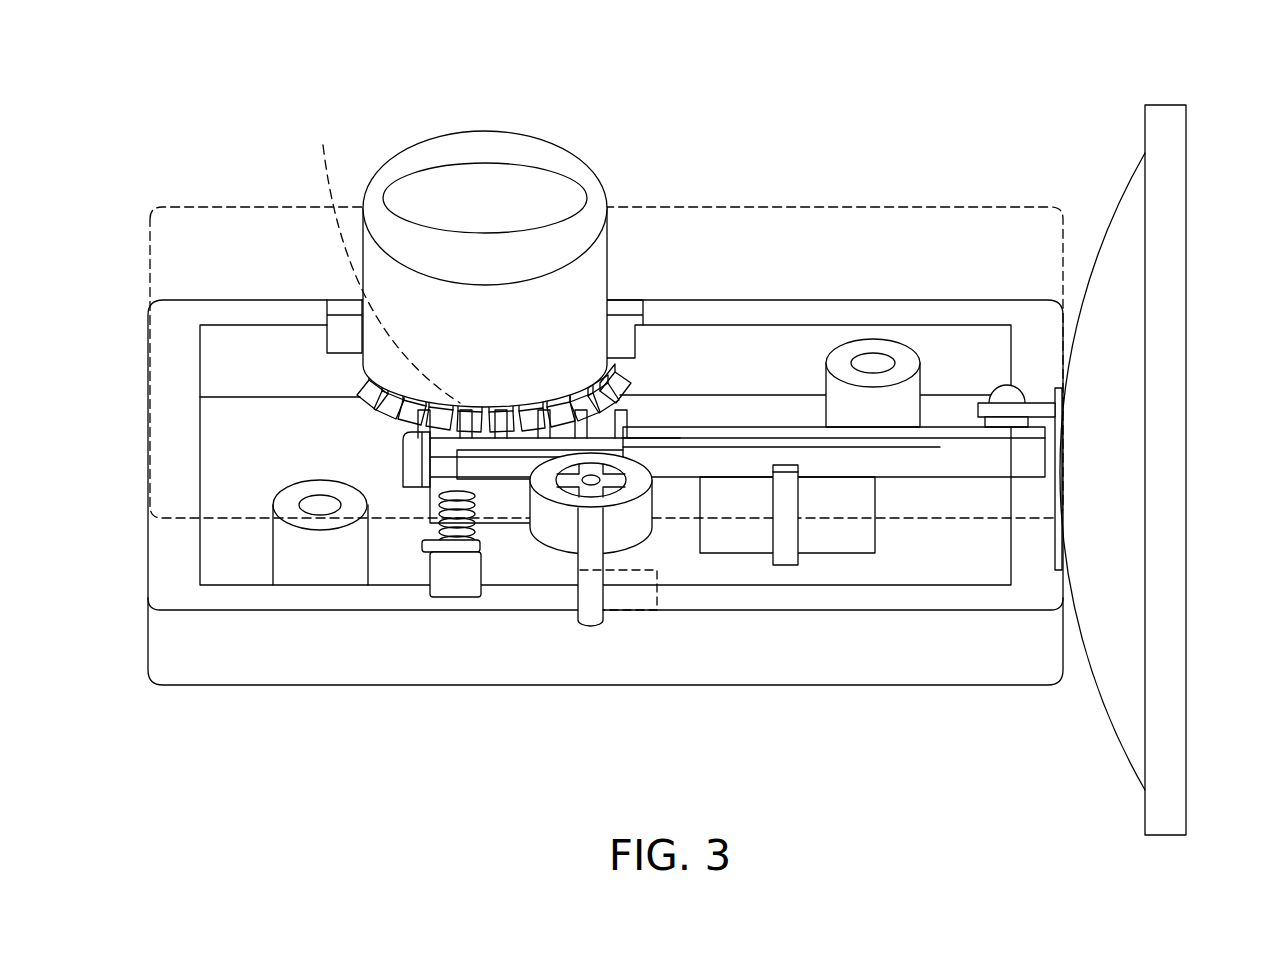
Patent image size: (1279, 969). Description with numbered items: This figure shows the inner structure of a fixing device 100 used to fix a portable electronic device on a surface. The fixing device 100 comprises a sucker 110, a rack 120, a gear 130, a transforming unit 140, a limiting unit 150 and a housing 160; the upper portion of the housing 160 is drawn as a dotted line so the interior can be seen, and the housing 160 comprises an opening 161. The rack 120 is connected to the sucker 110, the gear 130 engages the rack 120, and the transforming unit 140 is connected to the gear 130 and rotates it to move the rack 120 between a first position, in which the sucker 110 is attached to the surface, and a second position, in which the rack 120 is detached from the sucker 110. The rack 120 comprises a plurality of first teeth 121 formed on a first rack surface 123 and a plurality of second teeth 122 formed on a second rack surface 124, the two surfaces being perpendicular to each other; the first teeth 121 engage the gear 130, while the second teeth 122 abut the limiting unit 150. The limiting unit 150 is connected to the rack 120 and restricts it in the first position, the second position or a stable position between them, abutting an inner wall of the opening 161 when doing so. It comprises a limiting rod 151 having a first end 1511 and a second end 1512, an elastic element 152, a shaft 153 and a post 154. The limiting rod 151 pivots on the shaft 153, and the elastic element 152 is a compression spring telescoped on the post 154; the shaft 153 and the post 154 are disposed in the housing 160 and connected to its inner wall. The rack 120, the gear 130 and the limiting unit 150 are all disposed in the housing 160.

The fixing device 100 is at (125, 63).
The sucker 110 is at (1175, 157).
The rack 120 is at (756, 332).
The first teeth 121 is at (630, 425).
The second teeth 122 is at (630, 455).
The first rack surface 123 is at (824, 435).
The second rack surface 124 is at (928, 457).
The gear 130 is at (368, 385).
The transforming unit 140 is at (483, 182).
The limiting unit 150 is at (538, 606).
The limiting rod 151 is at (578, 500).
The first end 1511 is at (443, 450).
The second end 1512 is at (600, 628).
The elastic element 152 is at (428, 545).
The shaft 153 is at (615, 485).
The post 154 is at (470, 540).
The housing 160 is at (158, 643).
The opening 161 is at (382, 259).